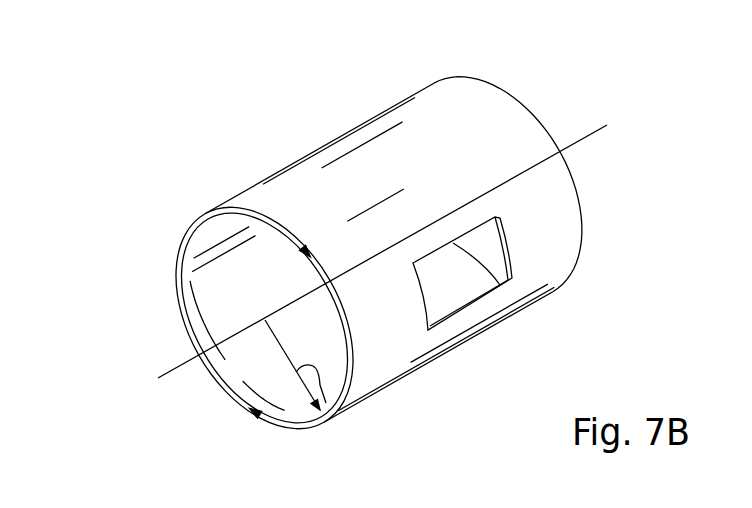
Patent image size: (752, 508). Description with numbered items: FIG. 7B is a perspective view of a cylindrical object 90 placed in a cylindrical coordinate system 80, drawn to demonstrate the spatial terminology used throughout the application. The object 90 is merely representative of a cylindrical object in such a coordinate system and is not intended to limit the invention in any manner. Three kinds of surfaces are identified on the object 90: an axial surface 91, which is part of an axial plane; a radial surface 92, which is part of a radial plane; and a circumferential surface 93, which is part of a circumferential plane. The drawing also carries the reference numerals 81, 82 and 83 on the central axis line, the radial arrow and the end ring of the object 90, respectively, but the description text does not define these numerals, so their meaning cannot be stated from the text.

The cylindrical coordinate system 80 is at (528, 92).
The longitudinal axis 81 is at (167, 376).
The radius / wall thickness 82 is at (336, 406).
The end ring 83 is at (186, 232).
The cylindrical object 90 is at (415, 82).
The axial surface 91 is at (483, 286).
The radial surface 92 is at (278, 421).
The circumferential surface 93 is at (362, 160).